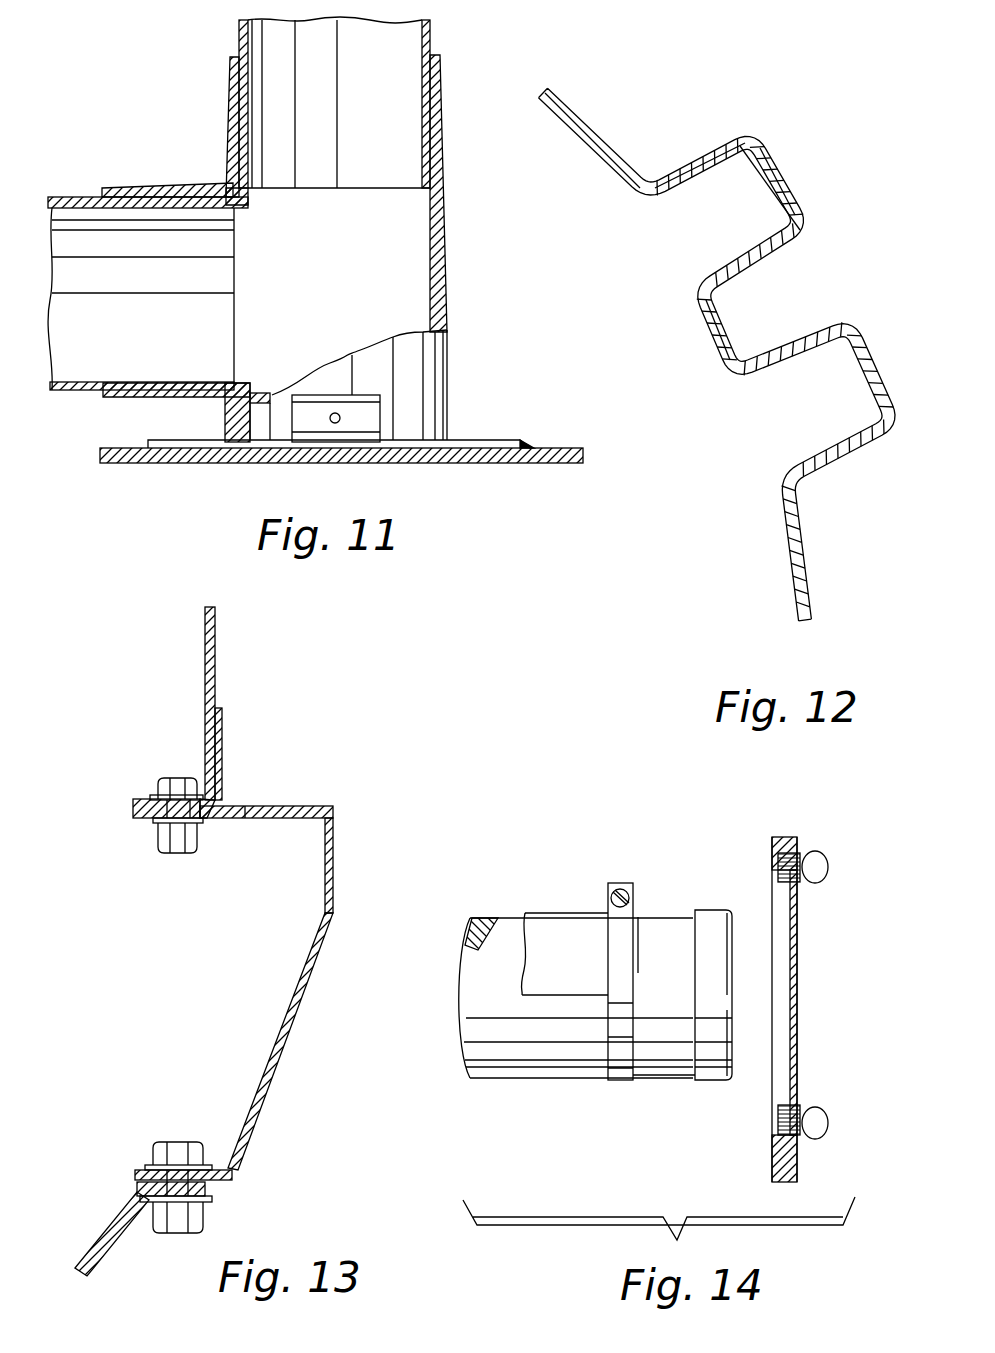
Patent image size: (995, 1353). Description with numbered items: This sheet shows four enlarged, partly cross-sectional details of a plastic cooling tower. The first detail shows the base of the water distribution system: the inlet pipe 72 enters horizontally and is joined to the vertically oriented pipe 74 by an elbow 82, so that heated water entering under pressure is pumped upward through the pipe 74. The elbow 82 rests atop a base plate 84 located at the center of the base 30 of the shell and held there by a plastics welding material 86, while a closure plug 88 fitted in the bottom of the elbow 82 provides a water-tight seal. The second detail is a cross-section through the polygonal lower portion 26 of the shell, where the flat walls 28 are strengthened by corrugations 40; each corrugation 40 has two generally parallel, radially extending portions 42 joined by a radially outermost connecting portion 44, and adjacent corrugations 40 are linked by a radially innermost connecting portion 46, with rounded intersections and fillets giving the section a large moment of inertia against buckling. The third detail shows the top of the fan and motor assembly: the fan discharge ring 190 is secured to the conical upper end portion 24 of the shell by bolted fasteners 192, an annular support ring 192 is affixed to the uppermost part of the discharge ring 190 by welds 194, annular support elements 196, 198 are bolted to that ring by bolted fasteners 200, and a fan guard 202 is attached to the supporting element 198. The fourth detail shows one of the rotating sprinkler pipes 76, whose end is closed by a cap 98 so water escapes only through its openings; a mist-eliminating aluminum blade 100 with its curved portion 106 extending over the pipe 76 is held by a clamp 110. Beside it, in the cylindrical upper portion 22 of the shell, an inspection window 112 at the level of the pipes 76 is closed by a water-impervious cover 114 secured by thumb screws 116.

In FIG. 11, the vertically oriented pipe 74 is at (432, 38).
In FIG. 11, the inlet pipe 72 is at (68, 197).
In FIG. 11, the elbow 82 is at (447, 225).
In FIG. 11, the closure plug 88 is at (268, 393).
In FIG. 11, the base plate 84 is at (470, 440).
In FIG. 11, the plastics welding material 86 is at (526, 442).
In FIG. 11, the base 30 is at (572, 450).
In FIG. 12, the polygonal lower portion 26 is at (665, 95).
In FIG. 12, the flat walls 28 is at (577, 118).
In FIG. 12, the corrugations 40 is at (722, 132).
In FIG. 12, the radially extending portions 42 is at (682, 167).
In FIG. 12, the radially outermost connecting portion 44 is at (777, 183).
In FIG. 12, the radially innermost connecting portion 46 is at (712, 332).
In FIG. 13, the fan guard 202 is at (218, 662).
In FIG. 13, the annular support element 198 is at (222, 733).
In FIG. 13, the annular support element 196 is at (140, 797).
In FIG. 13, the annular support ring 192 is at (290, 805).
In FIG. 13, the welds 194 is at (243, 822).
In FIG. 13, the fan discharge ring 190 is at (290, 1013).
In FIG. 13, the bolted fasteners 200 is at (178, 778).
In FIG. 13, the conical upper end portion 24 is at (107, 1222).
In FIG. 14, the aluminum blades 100 is at (552, 898).
In FIG. 14, the curved portion 106 is at (578, 922).
In FIG. 14, the clamps 110 is at (613, 882).
In FIG. 14, the cap 98 is at (713, 913).
In FIG. 14, the sprinkler pipes 76 is at (665, 1070).
In FIG. 14, the cylindrical upper portion 22 is at (793, 1160).
In FIG. 14, the water-impervious cover 114 is at (800, 993).
In FIG. 14, the inspection window 112 is at (773, 1097).
In FIG. 14, the thumb screws 116 is at (828, 862).